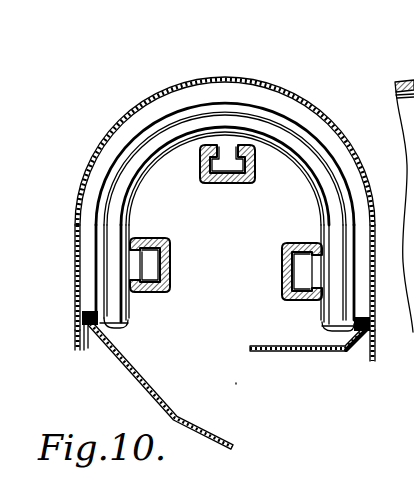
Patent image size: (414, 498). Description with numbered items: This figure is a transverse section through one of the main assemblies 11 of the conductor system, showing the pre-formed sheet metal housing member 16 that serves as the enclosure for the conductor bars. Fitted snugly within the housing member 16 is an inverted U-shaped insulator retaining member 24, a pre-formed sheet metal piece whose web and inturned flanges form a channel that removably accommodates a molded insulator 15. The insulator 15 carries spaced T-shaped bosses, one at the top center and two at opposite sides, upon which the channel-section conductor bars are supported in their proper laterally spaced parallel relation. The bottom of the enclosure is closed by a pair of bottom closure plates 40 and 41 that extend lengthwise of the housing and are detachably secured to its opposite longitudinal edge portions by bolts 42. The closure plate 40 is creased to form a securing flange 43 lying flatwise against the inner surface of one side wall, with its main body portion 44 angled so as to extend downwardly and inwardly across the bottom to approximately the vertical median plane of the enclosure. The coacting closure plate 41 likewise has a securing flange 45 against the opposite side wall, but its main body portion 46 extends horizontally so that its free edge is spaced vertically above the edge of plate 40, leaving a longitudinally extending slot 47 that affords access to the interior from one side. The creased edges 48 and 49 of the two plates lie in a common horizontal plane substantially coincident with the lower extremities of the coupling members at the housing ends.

The main assembly 11 is at (229, 50).
The insulator 15 is at (138, 152).
The housing member 16 is at (330, 123).
The insulator retaining member 24 is at (124, 138).
The bottom closure plate 40 is at (159, 383).
The bottom closure plate 41 is at (305, 352).
The bolt 42 is at (78, 341).
The securing flange 43 is at (92, 340).
The main body portion 44 is at (149, 364).
The securing flange 45 is at (361, 337).
The main body portion 46 is at (272, 346).
The slot 47 is at (249, 396).
The creased edge 48 is at (84, 307).
The creased edge 49 is at (362, 322).